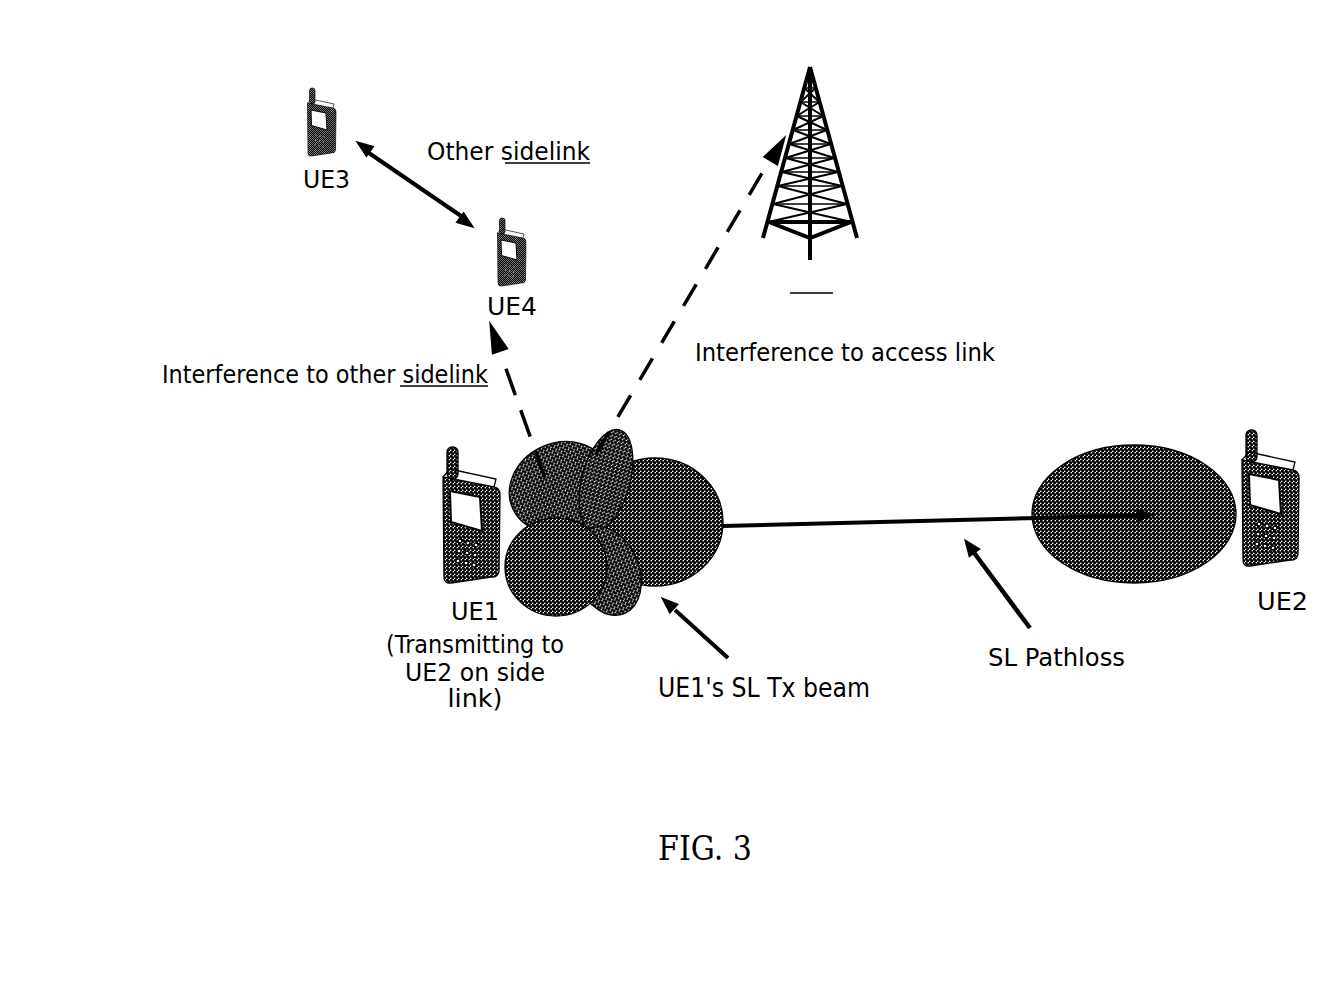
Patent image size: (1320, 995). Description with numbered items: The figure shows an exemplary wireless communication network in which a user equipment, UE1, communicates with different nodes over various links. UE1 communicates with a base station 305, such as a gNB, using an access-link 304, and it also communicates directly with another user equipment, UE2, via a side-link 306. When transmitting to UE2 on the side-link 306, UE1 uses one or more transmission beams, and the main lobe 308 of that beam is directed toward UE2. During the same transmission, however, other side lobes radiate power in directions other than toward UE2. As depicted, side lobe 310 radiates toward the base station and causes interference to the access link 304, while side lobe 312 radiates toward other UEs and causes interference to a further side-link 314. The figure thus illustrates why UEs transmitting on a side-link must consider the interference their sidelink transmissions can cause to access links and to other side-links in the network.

The access-link 304 is at (720, 238).
The base station 305 is at (809, 67).
The side-link 306 is at (898, 520).
The main lobe 308 is at (697, 463).
The side lobe 310 is at (627, 432).
The side lobe 312 is at (545, 452).
The side-link 314 is at (507, 362).